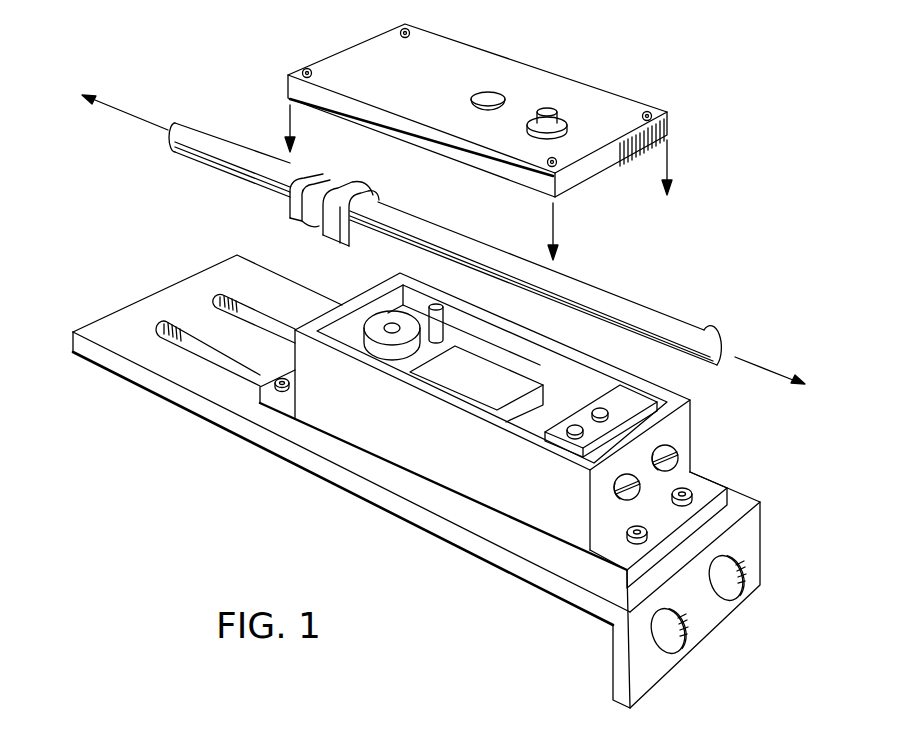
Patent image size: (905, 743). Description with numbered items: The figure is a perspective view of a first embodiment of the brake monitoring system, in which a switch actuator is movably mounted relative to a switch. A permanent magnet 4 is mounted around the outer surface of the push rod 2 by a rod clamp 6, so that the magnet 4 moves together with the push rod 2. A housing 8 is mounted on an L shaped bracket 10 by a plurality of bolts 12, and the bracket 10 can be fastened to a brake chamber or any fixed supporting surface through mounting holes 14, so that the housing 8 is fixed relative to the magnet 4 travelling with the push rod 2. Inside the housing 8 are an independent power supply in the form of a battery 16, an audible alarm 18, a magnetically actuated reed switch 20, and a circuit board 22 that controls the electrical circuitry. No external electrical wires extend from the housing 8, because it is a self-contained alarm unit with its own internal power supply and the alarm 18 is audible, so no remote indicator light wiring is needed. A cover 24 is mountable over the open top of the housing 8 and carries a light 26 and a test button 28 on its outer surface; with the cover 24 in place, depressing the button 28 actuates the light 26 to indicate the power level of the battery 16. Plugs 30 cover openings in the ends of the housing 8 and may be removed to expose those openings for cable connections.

The push rod 2 is at (190, 119).
The permanent magnet 4 is at (288, 215).
The rod clamp 6 is at (323, 232).
The housing 8 is at (446, 490).
The L shaped bracket 10 is at (580, 609).
The bolts 12 is at (639, 541).
The mounting holes 14 is at (720, 560).
The battery 16 is at (600, 393).
The audible alarm 18 is at (368, 322).
The reed switch 20 is at (444, 317).
The circuit board 22 is at (528, 370).
The cover 24 is at (344, 53).
The light 26 is at (490, 90).
The test button 28 is at (548, 109).
The plugs 30 is at (652, 449).